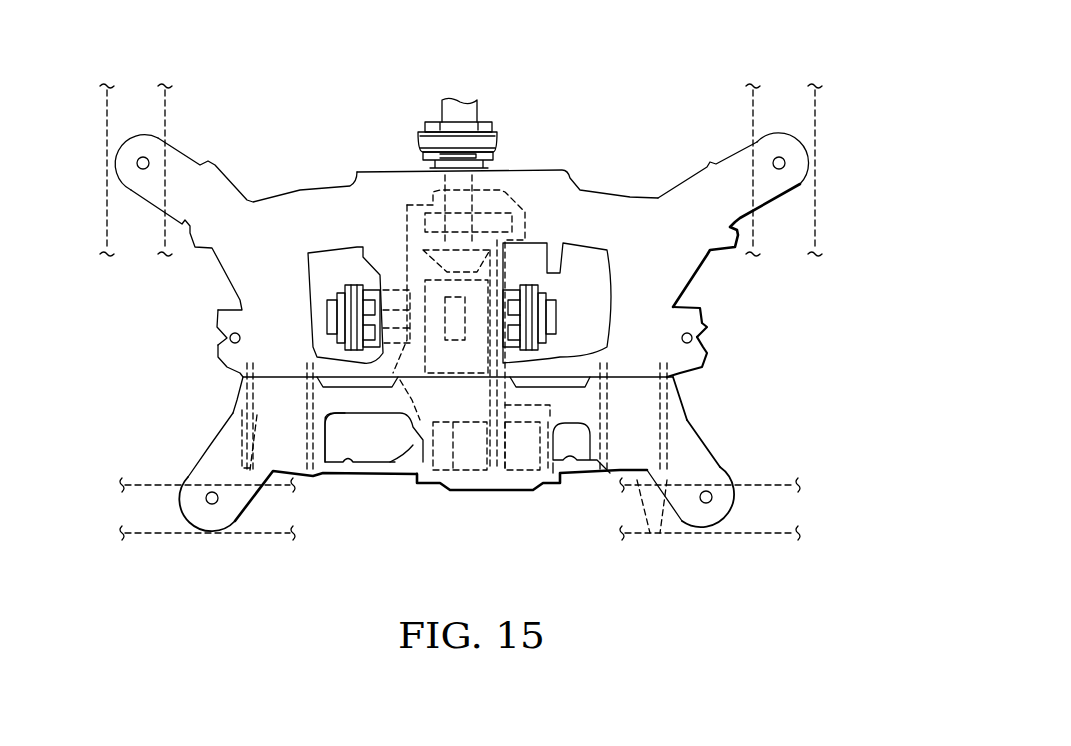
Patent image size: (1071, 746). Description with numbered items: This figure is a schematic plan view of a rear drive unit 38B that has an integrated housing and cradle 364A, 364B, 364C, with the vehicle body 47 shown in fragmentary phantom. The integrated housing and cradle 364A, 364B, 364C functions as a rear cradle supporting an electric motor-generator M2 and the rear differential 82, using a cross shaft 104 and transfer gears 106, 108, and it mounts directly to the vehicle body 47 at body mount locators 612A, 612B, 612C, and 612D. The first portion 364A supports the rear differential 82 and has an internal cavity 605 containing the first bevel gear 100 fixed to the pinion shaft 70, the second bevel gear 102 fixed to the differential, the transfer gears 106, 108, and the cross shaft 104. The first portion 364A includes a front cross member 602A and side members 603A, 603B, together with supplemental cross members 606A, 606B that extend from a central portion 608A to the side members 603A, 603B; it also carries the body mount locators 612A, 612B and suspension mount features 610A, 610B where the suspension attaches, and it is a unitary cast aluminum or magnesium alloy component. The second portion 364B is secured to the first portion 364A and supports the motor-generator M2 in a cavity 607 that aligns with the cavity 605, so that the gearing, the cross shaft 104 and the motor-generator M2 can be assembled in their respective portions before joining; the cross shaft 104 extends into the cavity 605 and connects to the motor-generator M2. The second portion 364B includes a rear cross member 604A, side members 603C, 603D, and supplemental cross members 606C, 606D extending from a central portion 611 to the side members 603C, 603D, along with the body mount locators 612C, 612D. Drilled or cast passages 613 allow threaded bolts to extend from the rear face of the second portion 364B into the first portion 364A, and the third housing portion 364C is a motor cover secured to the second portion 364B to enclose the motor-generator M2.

The rear drive unit 38B is at (614, 52).
The vehicle body 47 is at (107, 207).
The pinion shaft 70 is at (433, 190).
The rear differential 82 is at (523, 233).
The first bevel gear 100 is at (427, 237).
The second bevel gear 102 is at (398, 377).
The cross shaft 104 is at (462, 385).
The transfer gear 106 is at (480, 230).
The transfer gear 108 is at (487, 200).
The first portion of the integrated housing and cradle 364A is at (693, 278).
The second portion of the integrated housing and cradle 364B is at (690, 413).
The third housing portion 364C is at (488, 490).
The front cross member 602A is at (320, 190).
The side member 603A is at (227, 273).
The side member 603B is at (680, 297).
The side member 603C is at (237, 383).
The side member 603D is at (697, 428).
The rear cross member 604A is at (375, 408).
The internal cavity 605 is at (527, 292).
The supplemental cross member 606A is at (340, 357).
The supplemental cross member 606B is at (560, 358).
The supplemental cross member 606C is at (333, 460).
The supplemental cross member 606D is at (563, 477).
The cavity 607 is at (417, 477).
The central portion 608A is at (363, 343).
The suspension mount feature 610A is at (213, 333).
The suspension mount feature 610B is at (693, 343).
The central portion 611 is at (413, 427).
The body mount locator 612A is at (147, 163).
The body mount locator 612B is at (780, 162).
The body mount locator 612C is at (210, 498).
The body mount locator 612D is at (708, 500).
The passages 613 is at (307, 450).
The electric motor-generator M2 is at (458, 472).